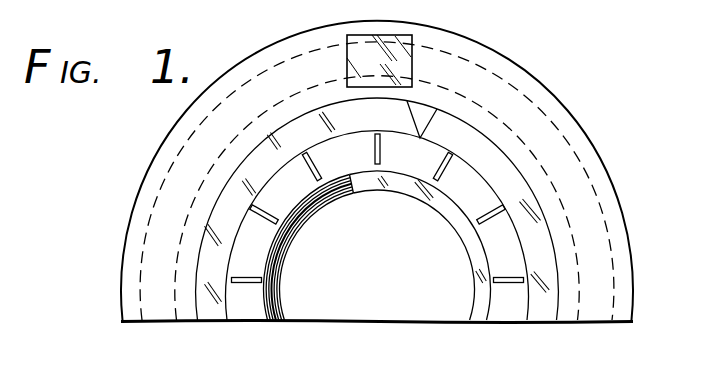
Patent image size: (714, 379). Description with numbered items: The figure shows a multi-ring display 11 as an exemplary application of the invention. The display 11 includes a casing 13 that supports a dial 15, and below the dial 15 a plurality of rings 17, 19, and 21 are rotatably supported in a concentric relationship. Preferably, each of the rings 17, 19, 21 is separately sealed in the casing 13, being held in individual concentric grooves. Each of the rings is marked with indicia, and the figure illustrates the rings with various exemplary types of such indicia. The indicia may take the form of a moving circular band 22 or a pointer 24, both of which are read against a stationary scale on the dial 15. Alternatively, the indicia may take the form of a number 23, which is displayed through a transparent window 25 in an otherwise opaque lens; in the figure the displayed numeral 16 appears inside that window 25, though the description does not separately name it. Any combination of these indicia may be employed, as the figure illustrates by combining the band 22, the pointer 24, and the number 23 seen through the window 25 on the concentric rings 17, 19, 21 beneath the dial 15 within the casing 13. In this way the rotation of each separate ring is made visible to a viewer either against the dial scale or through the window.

The multi-ring display 11 is at (562, 92).
The casing 13 is at (633, 247).
The dial 15 is at (578, 129).
The ring 17 is at (606, 218).
The ring 19 is at (531, 242).
The ring 21 is at (477, 268).
The moving circular band 22 is at (297, 237).
The number 23 is at (405, 68).
The pointer 24 is at (415, 117).
The transparent window 25 is at (397, 35).
The numeral indication 16 is at (381, 63).